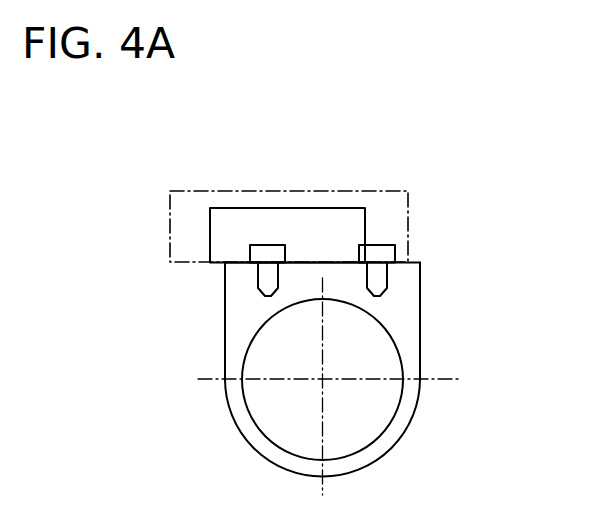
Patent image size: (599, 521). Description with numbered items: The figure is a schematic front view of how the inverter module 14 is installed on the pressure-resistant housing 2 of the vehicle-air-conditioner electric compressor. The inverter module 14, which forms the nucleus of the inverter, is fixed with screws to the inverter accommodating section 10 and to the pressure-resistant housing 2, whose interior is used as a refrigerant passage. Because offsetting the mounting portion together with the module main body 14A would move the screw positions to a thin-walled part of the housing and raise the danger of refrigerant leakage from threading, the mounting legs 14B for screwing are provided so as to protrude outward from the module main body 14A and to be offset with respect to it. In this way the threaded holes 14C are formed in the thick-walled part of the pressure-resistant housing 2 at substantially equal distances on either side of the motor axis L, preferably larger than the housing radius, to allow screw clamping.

The pressure-resistant housing 2 is at (403, 418).
The inverter accommodating section 10 is at (210, 190).
The inverter module 14 is at (302, 205).
The module main body 14A is at (218, 232).
The mounting legs 14B is at (386, 253).
The threaded holes 14C is at (375, 280).
The motor axis L is at (322, 379).